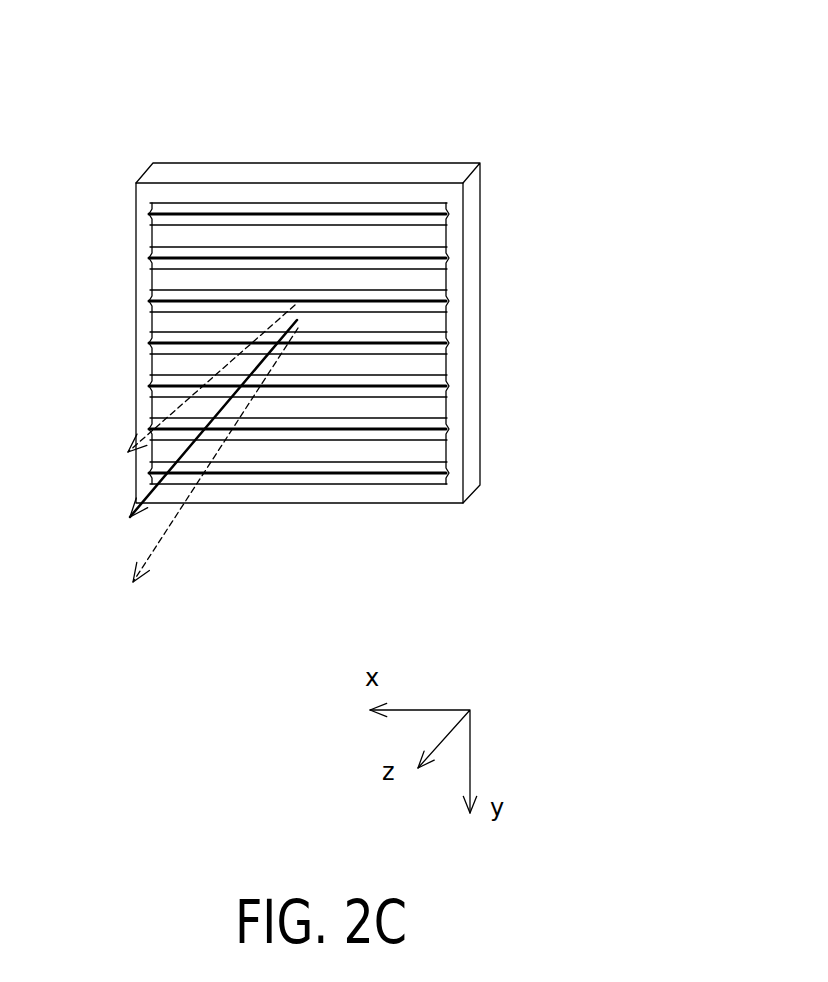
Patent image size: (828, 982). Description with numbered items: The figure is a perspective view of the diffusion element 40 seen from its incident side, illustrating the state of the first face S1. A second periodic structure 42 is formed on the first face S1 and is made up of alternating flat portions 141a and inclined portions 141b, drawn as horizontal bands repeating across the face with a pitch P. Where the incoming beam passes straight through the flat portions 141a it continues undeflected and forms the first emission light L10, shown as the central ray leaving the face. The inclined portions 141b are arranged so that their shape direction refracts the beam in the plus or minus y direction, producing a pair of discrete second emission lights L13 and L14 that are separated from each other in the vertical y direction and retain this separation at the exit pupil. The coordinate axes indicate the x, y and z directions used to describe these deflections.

The diffusion element 40 is at (363, 254).
The second periodic structure 42 is at (299, 244).
The flat portions 141a is at (363, 238).
The inclined portions 141b is at (223, 212).
The first face S1 is at (455, 305).
The second emission light L14 is at (172, 413).
The second emission light L13 is at (203, 477).
The first emission light L10 is at (157, 488).